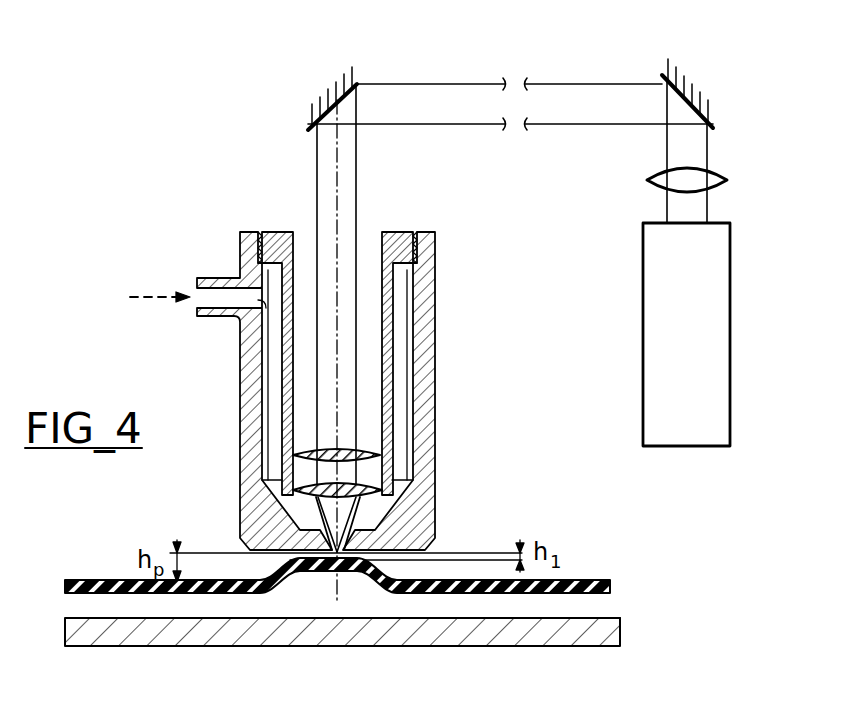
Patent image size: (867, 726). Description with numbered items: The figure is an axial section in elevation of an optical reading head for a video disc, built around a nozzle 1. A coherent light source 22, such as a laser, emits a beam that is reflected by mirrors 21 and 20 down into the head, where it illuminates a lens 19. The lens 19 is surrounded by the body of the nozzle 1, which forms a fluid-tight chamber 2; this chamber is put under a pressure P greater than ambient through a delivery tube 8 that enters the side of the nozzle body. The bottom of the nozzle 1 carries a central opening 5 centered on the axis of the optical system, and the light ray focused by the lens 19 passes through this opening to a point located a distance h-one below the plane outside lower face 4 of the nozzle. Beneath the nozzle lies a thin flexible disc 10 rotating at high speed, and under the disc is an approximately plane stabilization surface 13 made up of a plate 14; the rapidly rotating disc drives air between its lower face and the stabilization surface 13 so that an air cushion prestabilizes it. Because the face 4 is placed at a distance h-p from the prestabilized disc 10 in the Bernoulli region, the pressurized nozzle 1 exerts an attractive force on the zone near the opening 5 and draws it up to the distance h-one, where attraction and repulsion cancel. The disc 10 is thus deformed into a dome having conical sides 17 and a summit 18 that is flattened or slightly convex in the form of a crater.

The nozzle 1 is at (317, 391).
The fluid-tight chamber 2 is at (400, 293).
The lower face of nozzle 4 is at (410, 552).
The central opening 5 is at (362, 522).
The delivery tube 8 is at (212, 318).
The flexible disc 10 is at (80, 580).
The stabilization surface 13 is at (600, 618).
The plate 14 is at (548, 647).
The conical sides 17 is at (294, 576).
The summit 18 is at (348, 576).
The lens 19 is at (348, 490).
The mirror 20 is at (360, 80).
The mirror 21 is at (715, 128).
The coherent light source 22 is at (686, 447).